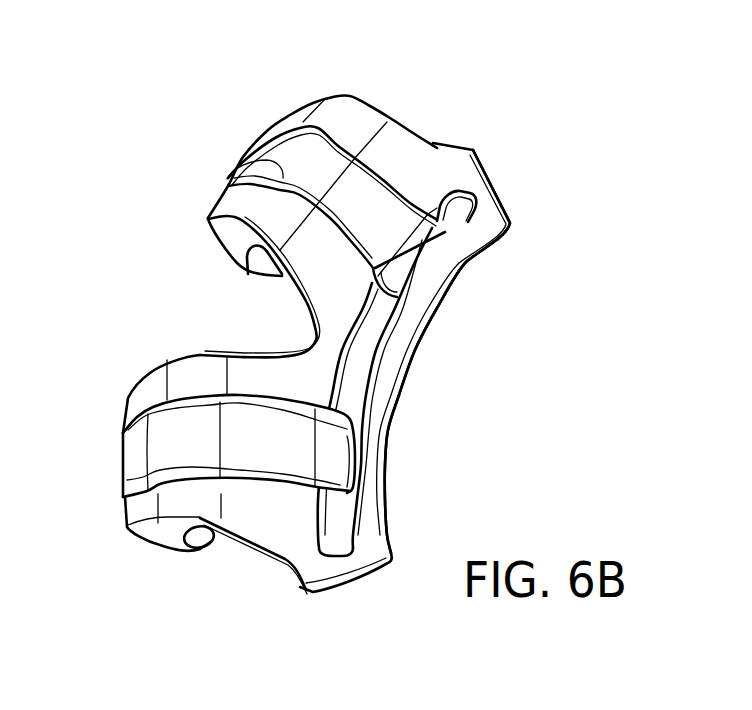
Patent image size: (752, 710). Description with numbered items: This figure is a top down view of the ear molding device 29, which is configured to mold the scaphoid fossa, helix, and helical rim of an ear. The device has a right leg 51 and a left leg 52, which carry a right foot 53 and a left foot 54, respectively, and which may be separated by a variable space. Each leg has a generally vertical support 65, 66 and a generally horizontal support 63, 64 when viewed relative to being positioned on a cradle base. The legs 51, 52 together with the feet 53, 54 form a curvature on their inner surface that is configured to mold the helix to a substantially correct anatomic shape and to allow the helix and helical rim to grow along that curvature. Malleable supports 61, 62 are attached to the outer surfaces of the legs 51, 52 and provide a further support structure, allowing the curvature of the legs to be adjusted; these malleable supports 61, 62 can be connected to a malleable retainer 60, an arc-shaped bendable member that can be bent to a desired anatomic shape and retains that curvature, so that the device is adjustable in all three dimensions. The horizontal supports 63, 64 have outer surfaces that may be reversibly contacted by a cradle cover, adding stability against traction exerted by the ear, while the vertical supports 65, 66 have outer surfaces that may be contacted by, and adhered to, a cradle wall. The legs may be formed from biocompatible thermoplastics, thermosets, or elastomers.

The ear molding device 29 is at (548, 214).
The right leg 51 is at (297, 104).
The left leg 52 is at (198, 548).
The right foot 53 is at (212, 242).
The left foot 54 is at (123, 447).
The malleable retainer 60 is at (377, 323).
The malleable support 61 is at (265, 129).
The malleable support 62 is at (127, 472).
The horizontal support 63 is at (350, 95).
The horizontal support 64 is at (212, 540).
The vertical support 65 is at (273, 160).
The vertical support 66 is at (203, 357).